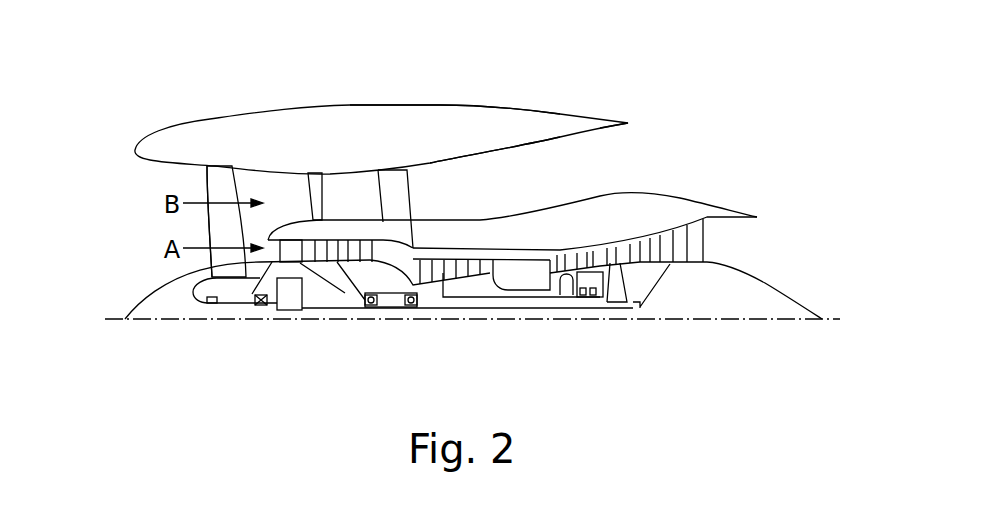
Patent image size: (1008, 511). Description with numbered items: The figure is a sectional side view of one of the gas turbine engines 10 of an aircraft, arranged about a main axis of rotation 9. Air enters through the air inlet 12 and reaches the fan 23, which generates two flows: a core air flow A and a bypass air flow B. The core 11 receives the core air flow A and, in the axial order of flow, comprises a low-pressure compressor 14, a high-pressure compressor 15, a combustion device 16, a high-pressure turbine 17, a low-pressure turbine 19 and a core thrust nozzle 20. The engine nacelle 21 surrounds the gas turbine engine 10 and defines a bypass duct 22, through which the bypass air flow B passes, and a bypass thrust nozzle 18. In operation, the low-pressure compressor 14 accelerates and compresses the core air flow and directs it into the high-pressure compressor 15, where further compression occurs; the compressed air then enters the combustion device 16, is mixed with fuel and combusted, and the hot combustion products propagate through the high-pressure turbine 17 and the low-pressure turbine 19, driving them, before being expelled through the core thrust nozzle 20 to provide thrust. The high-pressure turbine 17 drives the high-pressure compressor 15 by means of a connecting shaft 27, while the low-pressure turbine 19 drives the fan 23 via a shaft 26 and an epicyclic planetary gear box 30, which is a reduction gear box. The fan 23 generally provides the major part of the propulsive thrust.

The main axis of rotation 9 is at (721, 320).
The gas turbine engine 10 is at (183, 118).
The core 11 is at (536, 226).
The air inlet 12 is at (138, 175).
The low-pressure compressor 14 is at (345, 246).
The high-pressure compressor 15 is at (463, 265).
The combustion device 16 is at (520, 270).
The high-pressure turbine 17 is at (573, 255).
The bypass thrust nozzle 18 is at (722, 118).
The low-pressure turbine 19 is at (683, 255).
The core thrust nozzle 20 is at (768, 249).
The engine nacelle 21 is at (393, 118).
The bypass duct 22 is at (578, 158).
The fan 23 is at (213, 236).
The shaft 26 is at (432, 310).
The connecting shaft 27 is at (488, 298).
The epicyclic planetary gear box 30 is at (290, 305).